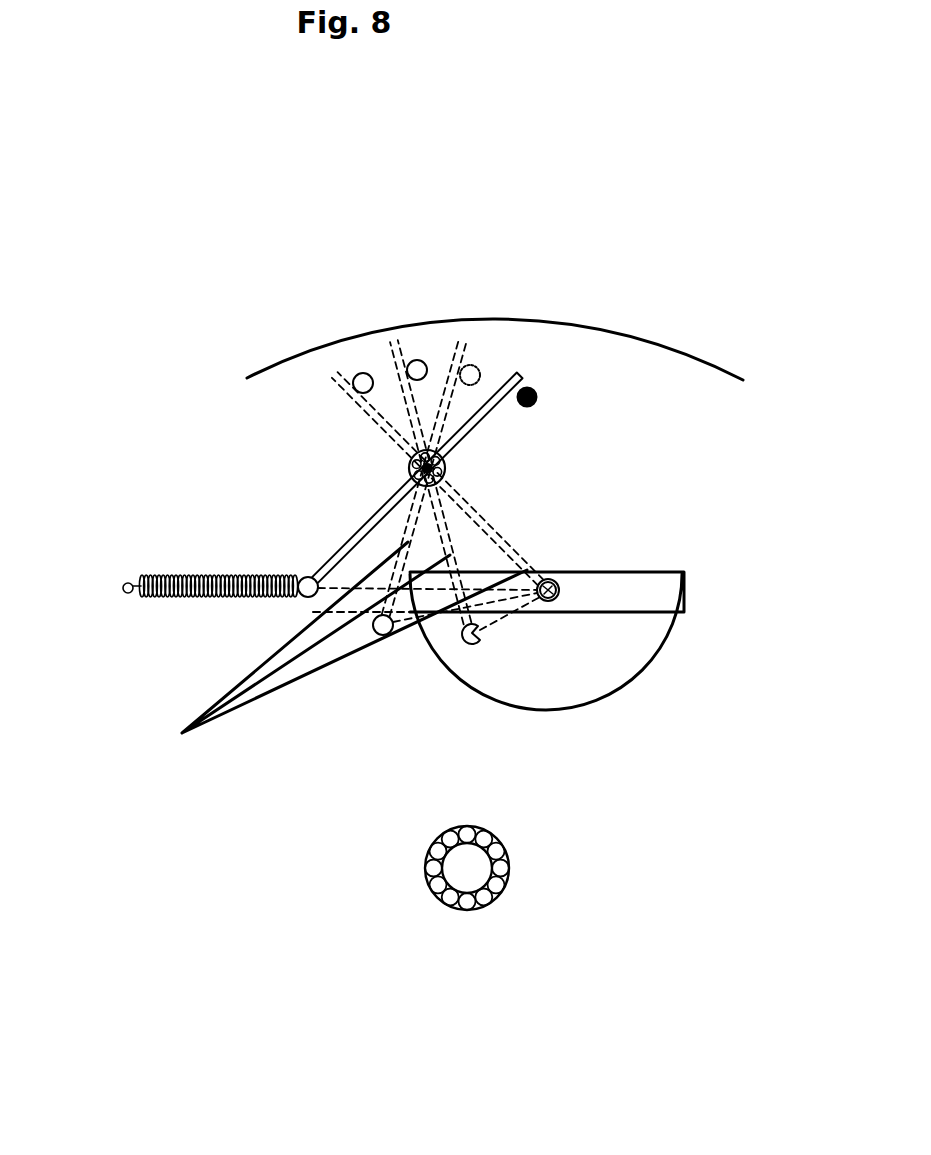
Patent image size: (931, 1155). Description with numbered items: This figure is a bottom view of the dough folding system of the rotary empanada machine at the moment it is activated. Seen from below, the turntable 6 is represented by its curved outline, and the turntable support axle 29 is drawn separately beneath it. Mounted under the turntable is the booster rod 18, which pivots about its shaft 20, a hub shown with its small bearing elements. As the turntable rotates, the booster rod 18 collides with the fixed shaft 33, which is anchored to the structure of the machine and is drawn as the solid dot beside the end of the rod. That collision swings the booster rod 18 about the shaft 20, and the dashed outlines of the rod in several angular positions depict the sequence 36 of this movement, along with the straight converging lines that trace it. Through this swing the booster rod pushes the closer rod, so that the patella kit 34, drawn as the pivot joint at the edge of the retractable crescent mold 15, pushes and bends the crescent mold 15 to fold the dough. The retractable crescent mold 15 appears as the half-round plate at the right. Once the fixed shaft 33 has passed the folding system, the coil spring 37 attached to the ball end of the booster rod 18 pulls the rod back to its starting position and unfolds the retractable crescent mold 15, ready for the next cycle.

The turntable 6 is at (335, 342).
The retractable crescent mold 15 is at (645, 570).
The booster rod 18 is at (355, 537).
The shaft where booster rod pivots 20 is at (409, 462).
The turntable support axle 29 is at (477, 865).
The fixed shaft 33 is at (535, 390).
The patella kit 34 is at (558, 592).
The sequence of movement of the booster rod 36 is at (325, 647).
The spring 37 is at (200, 587).